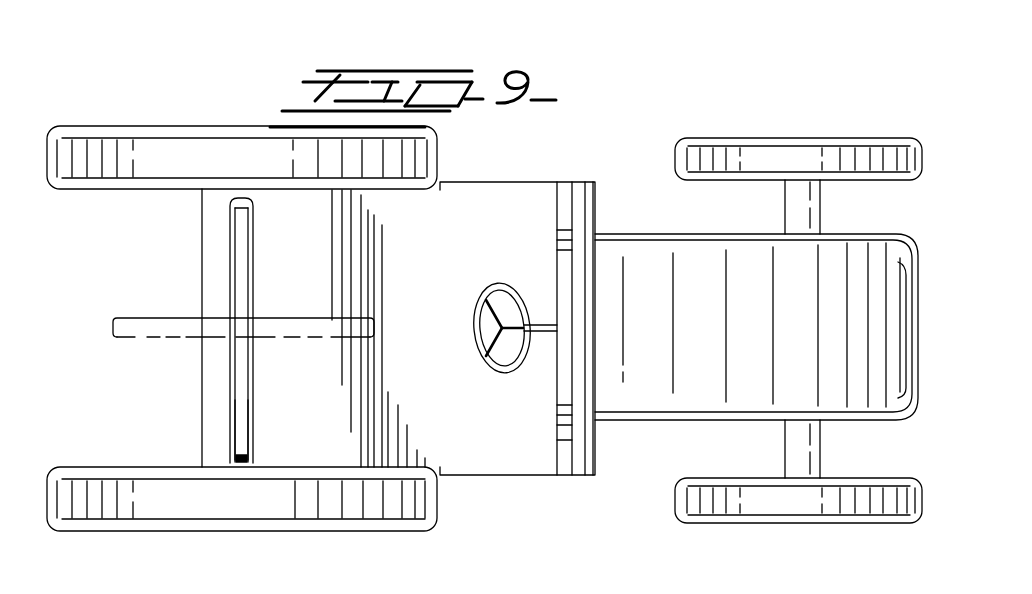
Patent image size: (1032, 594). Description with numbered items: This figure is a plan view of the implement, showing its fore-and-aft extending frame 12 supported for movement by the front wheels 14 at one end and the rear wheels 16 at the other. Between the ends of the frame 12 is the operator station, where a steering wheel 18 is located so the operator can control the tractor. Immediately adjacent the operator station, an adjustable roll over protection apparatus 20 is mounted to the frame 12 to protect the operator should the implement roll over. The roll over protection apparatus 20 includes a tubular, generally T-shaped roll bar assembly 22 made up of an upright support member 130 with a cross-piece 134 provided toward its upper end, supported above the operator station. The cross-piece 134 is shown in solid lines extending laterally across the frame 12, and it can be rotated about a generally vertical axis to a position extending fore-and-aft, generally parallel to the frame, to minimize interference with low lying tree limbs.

The frame 12 is at (645, 398).
The front wheels 14 is at (800, 155).
The rear wheels 16 is at (420, 166).
The steering wheel 18 is at (488, 356).
The roll over protection apparatus 20 is at (212, 383).
The roll bar assembly 22 is at (262, 277).
The upright support member 130 is at (243, 330).
The cross-piece 134 is at (243, 412).